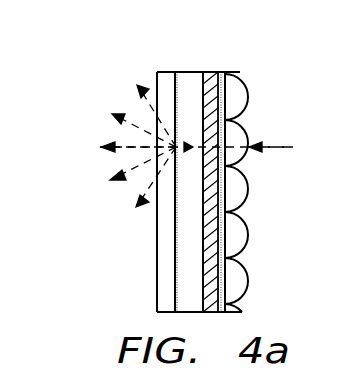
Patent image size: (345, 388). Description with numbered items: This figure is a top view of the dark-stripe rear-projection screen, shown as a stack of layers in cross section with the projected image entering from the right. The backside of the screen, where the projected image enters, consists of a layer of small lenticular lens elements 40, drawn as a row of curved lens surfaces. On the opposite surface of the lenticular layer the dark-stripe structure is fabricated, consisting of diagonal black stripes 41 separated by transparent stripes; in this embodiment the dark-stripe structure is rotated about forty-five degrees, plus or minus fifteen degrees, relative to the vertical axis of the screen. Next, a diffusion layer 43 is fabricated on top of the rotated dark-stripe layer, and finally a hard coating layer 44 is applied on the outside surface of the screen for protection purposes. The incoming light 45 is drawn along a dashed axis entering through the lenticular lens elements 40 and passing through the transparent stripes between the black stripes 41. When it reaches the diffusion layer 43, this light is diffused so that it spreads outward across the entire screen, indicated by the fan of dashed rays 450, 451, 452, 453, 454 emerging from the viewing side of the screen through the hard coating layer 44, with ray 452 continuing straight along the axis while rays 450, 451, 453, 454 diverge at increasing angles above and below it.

The lenticular lens elements 40 is at (250, 105).
The black stripes 41 is at (212, 73).
The diffusion layer 43 is at (191, 73).
The hard coating layer 44 is at (165, 280).
The light 45 is at (262, 152).
The diffused light across the screen 450 is at (135, 86).
The diffused light across the screen 451 is at (111, 113).
The diffused light across the screen 452 is at (100, 148).
The diffused light across the screen 453 is at (110, 184).
The diffused light across the screen 454 is at (133, 210).